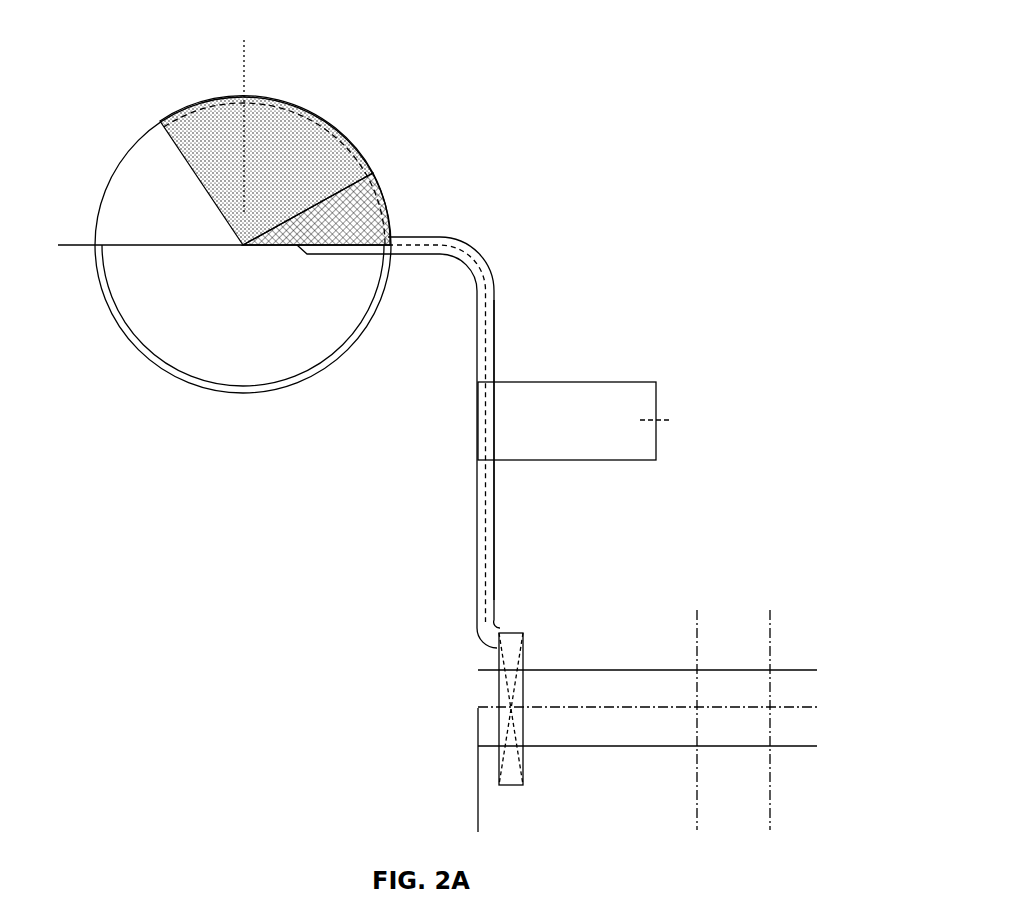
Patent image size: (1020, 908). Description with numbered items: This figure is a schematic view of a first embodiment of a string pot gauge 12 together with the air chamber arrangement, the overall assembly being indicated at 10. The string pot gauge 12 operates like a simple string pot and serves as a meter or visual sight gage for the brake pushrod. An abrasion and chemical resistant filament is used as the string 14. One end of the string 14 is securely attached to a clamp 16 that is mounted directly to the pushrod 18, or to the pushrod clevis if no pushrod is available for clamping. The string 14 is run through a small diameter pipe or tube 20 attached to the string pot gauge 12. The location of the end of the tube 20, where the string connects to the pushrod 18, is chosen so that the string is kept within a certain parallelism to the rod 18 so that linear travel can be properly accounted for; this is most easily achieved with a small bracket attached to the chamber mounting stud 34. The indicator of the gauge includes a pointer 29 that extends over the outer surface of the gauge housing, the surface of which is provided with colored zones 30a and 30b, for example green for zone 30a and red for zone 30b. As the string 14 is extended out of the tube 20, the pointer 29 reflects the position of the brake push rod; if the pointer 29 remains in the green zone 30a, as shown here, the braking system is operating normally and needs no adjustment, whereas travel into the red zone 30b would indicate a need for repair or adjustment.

The mounting assembly 10 is at (395, 535).
The string pot gauge 12 is at (124, 157).
The string 14 is at (497, 572).
The clamp 16 is at (512, 633).
The pushrod 18 is at (576, 670).
The pipe or tube 20 is at (495, 297).
The pointer 29 is at (190, 155).
The colored zone 30a is at (327, 132).
The colored zone 30b is at (388, 212).
The chamber mounting stud 34 is at (626, 382).